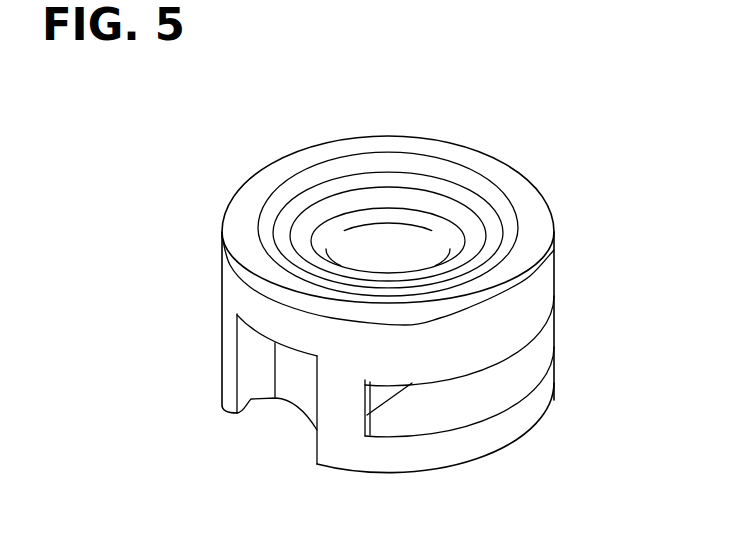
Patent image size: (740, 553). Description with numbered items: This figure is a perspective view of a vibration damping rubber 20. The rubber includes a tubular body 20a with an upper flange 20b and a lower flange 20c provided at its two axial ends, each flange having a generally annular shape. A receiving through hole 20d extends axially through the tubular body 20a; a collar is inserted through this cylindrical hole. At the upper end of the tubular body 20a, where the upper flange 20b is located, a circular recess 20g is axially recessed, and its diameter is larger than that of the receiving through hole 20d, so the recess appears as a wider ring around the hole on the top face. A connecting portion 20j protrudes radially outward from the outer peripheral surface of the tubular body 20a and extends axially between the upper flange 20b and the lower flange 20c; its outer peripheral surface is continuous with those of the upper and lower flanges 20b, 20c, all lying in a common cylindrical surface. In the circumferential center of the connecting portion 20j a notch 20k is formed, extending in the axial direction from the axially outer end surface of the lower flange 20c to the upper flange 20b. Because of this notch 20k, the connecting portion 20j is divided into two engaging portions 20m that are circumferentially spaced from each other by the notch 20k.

The vibration damping rubber 20 is at (531, 147).
The tubular body 20a is at (452, 196).
The upper flange 20b is at (556, 284).
The lower flange 20c is at (520, 415).
The receiving through hole 20d is at (405, 258).
The circular recess 20g is at (387, 210).
The connecting portion 20j is at (333, 400).
The notch 20k is at (252, 400).
The engaging portions 20m is at (224, 312).